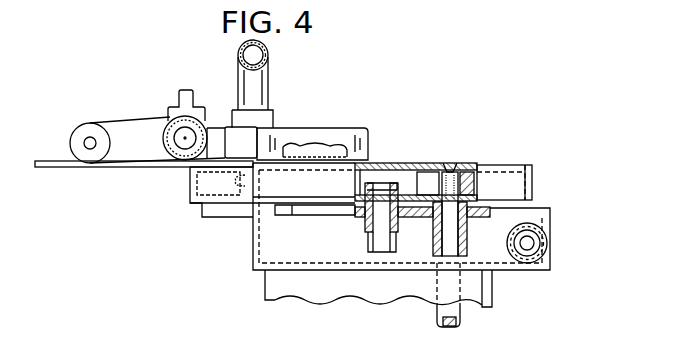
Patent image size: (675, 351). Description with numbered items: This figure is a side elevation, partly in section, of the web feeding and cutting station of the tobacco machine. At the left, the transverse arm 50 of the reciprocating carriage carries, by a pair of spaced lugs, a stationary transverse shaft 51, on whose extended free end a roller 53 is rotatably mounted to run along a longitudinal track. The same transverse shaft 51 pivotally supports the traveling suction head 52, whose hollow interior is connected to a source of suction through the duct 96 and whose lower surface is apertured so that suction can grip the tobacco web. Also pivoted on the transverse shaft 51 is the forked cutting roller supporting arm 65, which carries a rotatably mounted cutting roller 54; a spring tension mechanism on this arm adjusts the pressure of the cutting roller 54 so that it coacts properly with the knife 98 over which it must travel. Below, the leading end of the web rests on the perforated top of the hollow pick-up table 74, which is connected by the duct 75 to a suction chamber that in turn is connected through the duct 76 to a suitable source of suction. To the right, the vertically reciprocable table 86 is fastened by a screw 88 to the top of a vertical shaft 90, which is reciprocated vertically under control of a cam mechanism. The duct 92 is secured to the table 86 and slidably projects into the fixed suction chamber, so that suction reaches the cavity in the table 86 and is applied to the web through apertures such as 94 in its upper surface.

The transverse arm 50 is at (190, 90).
The transverse shaft 51 is at (183, 152).
The traveling suction head 52 is at (347, 129).
The roller 53 is at (168, 151).
The cutting roller 54 is at (79, 122).
The cutting roller supporting arm 65 is at (131, 128).
The pick-up table 74 is at (190, 198).
The duct 75 is at (302, 218).
The duct 76 is at (547, 235).
The vertically reciprocable table 86 is at (532, 173).
The screw 88 is at (453, 168).
The vertical shaft 90 is at (460, 319).
The duct 92 is at (363, 242).
The apertures 94 is at (380, 165).
The duct 96 is at (268, 56).
The knife 98 is at (250, 189).